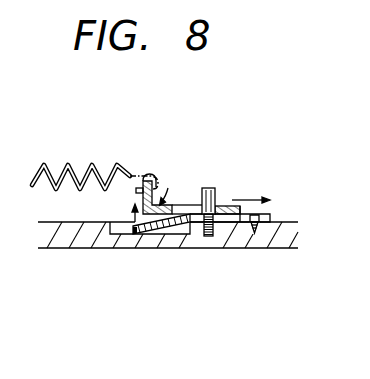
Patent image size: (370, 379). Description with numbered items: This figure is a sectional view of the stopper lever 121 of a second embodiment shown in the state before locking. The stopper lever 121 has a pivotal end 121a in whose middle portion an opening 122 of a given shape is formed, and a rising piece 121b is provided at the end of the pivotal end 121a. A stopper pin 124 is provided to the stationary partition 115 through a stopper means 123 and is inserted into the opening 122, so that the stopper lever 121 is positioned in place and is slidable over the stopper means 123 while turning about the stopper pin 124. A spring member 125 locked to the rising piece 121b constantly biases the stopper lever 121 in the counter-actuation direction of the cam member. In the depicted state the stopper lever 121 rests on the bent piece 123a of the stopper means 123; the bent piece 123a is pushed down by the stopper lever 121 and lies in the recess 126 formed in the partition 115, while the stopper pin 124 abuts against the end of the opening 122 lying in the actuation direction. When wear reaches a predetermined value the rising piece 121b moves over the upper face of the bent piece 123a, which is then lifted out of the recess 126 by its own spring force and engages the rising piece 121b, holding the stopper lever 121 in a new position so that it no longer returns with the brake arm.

The stationary partition 115 is at (67, 243).
The stopper lever 121 is at (178, 172).
The pivotal end 121a is at (222, 205).
The rising piece 121b is at (172, 169).
The opening 122 is at (188, 202).
The stopper means 123 is at (238, 224).
The bent piece 123a is at (165, 230).
The stopper pin 124 is at (208, 188).
The spring member 125 is at (48, 163).
The recess 126 is at (115, 230).